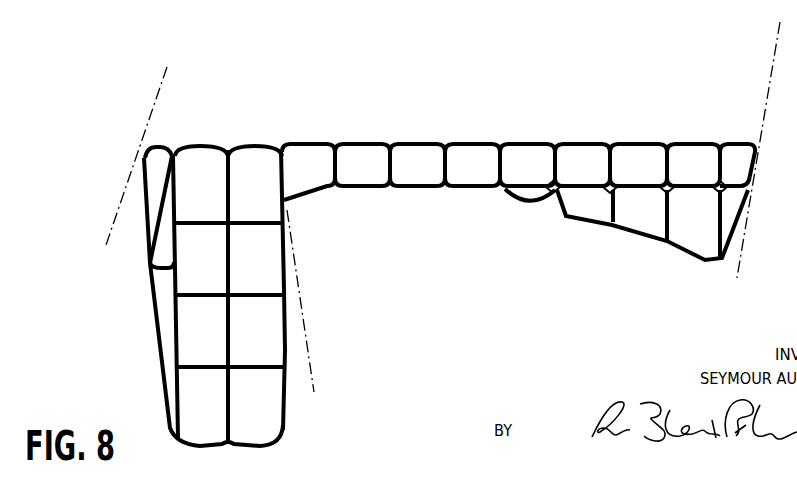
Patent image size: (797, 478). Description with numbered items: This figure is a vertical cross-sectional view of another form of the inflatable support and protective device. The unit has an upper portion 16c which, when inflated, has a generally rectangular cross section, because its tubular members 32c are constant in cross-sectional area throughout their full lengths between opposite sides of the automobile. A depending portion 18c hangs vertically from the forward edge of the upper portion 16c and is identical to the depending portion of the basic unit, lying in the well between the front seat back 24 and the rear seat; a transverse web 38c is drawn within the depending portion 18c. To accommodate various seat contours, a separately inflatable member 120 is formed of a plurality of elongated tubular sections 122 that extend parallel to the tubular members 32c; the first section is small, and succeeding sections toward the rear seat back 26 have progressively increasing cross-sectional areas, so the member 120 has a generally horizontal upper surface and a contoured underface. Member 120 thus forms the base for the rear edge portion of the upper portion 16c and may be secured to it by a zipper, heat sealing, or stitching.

The front seat back 24 is at (163, 82).
The rear seat back 26 is at (755, 80).
The upper portion 16c is at (528, 143).
The depending portion 18c is at (267, 375).
The tubular members 32c is at (368, 155).
The transverse web 38c is at (195, 291).
The separately inflatable member 120 is at (670, 242).
The elongated tubular sections 122 is at (707, 213).